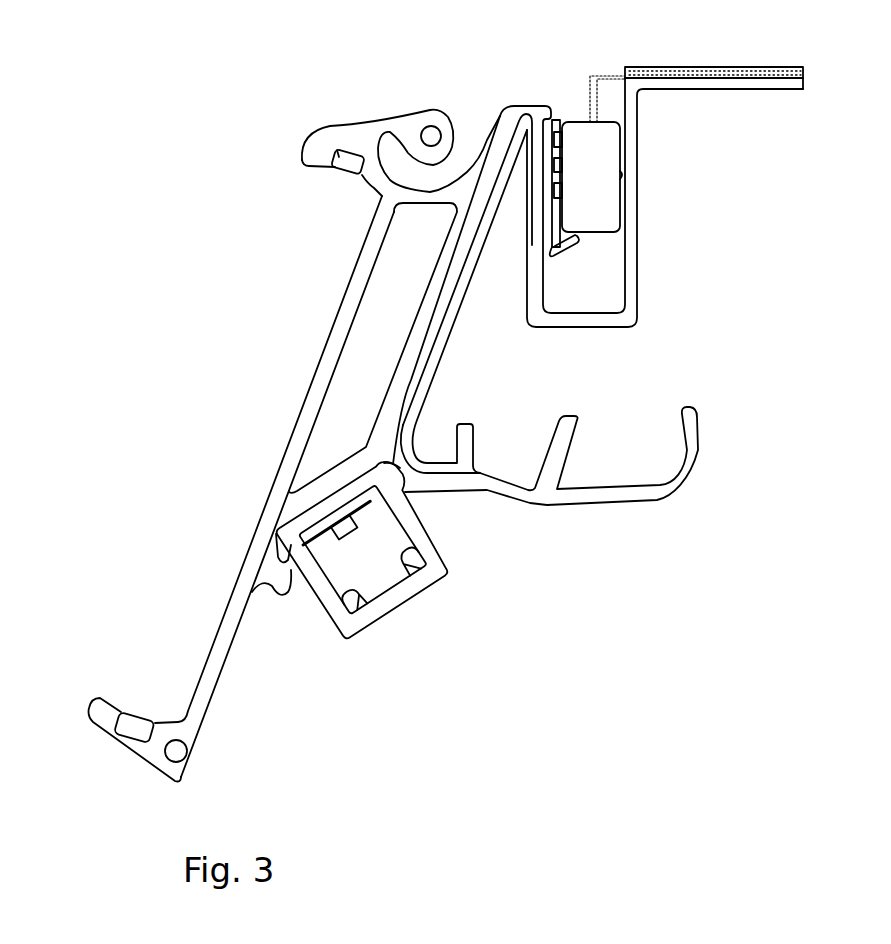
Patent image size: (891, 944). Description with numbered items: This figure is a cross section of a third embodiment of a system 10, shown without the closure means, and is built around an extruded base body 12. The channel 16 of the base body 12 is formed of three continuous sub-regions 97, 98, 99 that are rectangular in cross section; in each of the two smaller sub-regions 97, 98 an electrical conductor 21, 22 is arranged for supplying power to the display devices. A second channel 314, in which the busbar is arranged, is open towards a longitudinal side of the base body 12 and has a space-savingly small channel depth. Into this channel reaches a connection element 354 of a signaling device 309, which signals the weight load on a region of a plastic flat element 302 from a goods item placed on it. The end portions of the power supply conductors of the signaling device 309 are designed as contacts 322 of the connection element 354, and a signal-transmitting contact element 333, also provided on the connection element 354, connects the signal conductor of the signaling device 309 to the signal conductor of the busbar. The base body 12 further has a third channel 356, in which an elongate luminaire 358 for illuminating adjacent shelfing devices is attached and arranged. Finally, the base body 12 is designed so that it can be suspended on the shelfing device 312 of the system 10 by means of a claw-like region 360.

The system 10 is at (593, 333).
The base body 12 is at (330, 137).
The channel 16 is at (286, 428).
The electrical conductor 21 is at (345, 165).
The electrical conductor 22 is at (134, 716).
The sub-region 97 is at (331, 161).
The sub-region 98 is at (100, 699).
The sub-region 99 is at (235, 440).
The flat element 302 is at (714, 59).
The signaling device 309 is at (668, 69).
The shelfing device 312 is at (631, 272).
The second channel 314 is at (564, 122).
The contact 322 is at (563, 141).
The signal-transmitting contact element 333 is at (563, 190).
The connection element 354 is at (614, 201).
The third channel 356 is at (400, 472).
The luminaire 358 is at (336, 617).
The claw-like region 360 is at (489, 467).